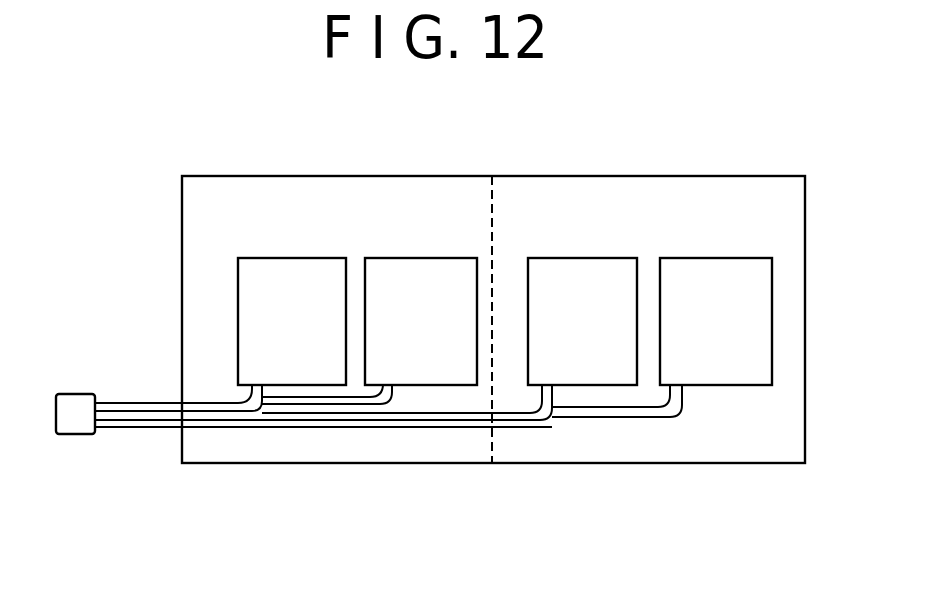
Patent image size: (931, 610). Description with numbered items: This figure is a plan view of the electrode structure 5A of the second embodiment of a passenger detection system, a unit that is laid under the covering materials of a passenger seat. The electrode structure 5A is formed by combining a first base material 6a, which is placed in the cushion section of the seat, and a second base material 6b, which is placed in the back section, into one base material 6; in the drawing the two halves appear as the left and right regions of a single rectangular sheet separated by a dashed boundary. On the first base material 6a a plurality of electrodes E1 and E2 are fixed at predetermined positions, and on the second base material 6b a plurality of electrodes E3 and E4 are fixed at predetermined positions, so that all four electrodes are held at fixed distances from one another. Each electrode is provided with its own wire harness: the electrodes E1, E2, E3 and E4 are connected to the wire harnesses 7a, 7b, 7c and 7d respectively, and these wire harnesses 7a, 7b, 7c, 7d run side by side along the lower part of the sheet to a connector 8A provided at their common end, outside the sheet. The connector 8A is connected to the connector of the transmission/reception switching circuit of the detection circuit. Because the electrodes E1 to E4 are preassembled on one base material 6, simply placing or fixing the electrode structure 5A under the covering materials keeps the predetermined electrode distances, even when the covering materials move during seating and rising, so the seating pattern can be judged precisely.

The electrode structure 5A is at (200, 176).
The base material 6 is at (181, 287).
The first base material 6a is at (253, 195).
The second base material 6b is at (657, 178).
The electrode E1 is at (303, 258).
The electrode E2 is at (405, 258).
The electrode E3 is at (570, 258).
The electrode E4 is at (713, 258).
The wire harness 7a is at (204, 403).
The wire harness 7b is at (335, 397).
The wire harness 7c is at (455, 413).
The wire harness 7d is at (625, 407).
The connector 8A is at (78, 435).